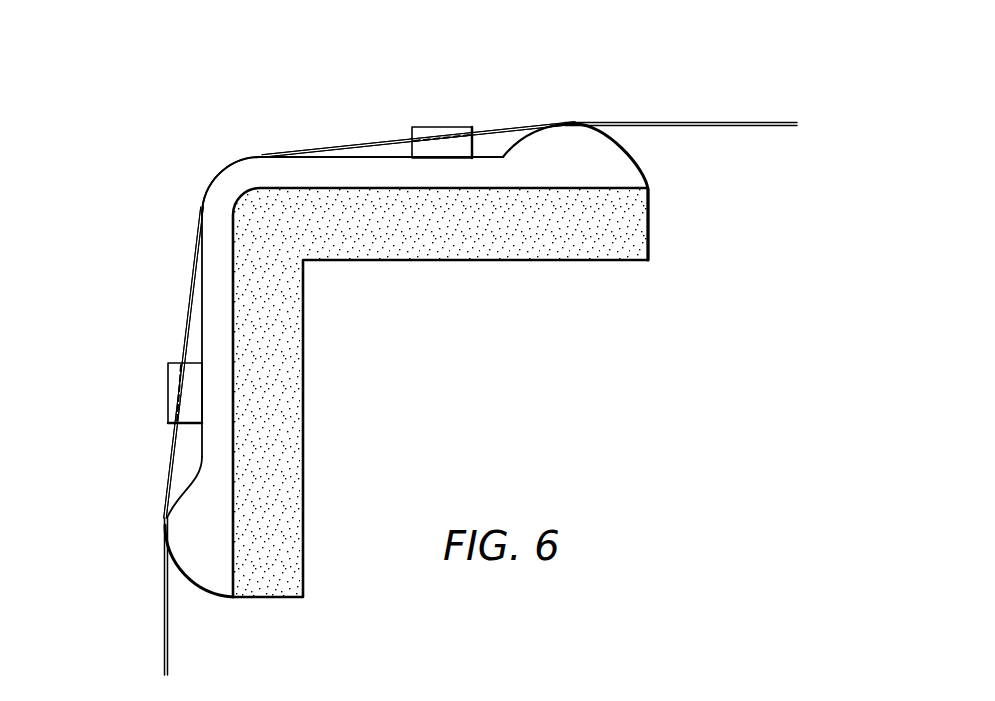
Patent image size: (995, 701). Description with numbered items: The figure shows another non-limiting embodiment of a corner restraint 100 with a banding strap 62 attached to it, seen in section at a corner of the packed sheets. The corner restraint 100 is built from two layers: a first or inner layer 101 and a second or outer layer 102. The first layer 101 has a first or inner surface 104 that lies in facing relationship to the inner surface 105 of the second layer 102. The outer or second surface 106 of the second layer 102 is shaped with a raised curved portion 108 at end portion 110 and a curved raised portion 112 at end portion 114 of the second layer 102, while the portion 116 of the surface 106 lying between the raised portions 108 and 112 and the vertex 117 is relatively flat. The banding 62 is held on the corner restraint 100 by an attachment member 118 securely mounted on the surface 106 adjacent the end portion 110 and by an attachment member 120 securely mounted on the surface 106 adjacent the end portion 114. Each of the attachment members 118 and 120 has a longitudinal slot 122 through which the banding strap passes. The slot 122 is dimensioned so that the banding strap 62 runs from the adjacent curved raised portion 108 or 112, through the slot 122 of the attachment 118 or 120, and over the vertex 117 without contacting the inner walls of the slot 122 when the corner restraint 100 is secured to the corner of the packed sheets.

The corner restraint 100 is at (164, 94).
The first or inner layer 101 is at (594, 270).
The second or outer layer 102 is at (236, 154).
The first or inner surface 104 is at (635, 197).
The inner surface 105 is at (612, 197).
The outer or second surface 106 is at (198, 273).
The raised curved portion 108 is at (165, 547).
The end portion 110 is at (212, 590).
The curved raised portion 112 is at (612, 132).
The end portion 114 is at (648, 175).
The portion of the surface 116 is at (195, 296).
The vertex 117 is at (217, 183).
The attachment member 118 is at (168, 382).
The attachment member 120 is at (438, 127).
The longitudinal slot 122 is at (458, 136).
The banding strap 62 is at (687, 122).